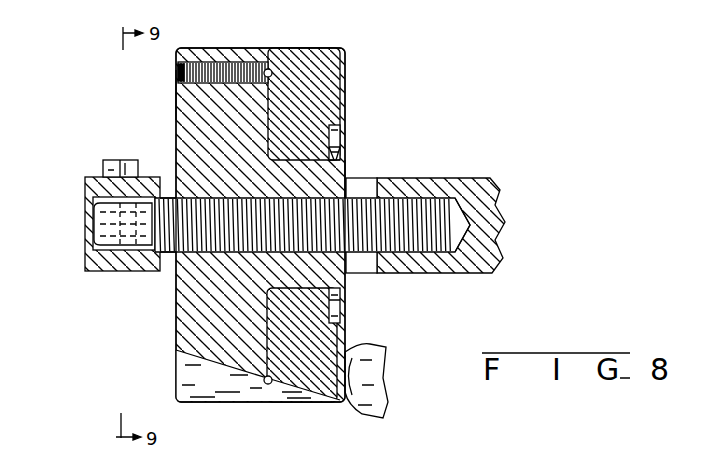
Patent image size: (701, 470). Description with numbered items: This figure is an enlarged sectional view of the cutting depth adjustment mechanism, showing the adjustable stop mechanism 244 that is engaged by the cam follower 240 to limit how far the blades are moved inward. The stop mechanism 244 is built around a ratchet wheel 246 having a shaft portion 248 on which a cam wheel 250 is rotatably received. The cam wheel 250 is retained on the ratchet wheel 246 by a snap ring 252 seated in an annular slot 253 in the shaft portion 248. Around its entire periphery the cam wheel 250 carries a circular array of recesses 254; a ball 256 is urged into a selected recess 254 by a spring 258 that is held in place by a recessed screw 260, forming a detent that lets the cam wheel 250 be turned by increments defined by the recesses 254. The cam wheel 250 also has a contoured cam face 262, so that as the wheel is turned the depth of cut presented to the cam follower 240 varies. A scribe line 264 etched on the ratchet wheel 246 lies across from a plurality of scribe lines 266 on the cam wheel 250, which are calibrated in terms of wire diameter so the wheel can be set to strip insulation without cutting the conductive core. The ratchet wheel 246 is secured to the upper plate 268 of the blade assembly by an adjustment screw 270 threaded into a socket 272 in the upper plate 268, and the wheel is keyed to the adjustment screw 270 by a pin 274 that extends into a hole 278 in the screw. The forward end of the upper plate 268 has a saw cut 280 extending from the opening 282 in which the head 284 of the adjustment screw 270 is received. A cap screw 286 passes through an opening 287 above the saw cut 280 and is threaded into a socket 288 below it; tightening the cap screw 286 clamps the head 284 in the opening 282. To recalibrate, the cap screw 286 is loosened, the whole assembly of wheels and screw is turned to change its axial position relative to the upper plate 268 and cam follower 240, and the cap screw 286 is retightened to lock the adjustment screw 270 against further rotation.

The cam follower 240 is at (360, 348).
The adjustable stop mechanism 244 is at (365, 85).
The ratchet wheel 246 is at (176, 91).
The shaft portion 248 is at (347, 177).
The cam wheel 250 is at (315, 51).
The snap ring 252 is at (340, 150).
The annular slot 253 is at (338, 170).
The recesses 254 is at (272, 72).
The ball 256 is at (274, 80).
The spring 258 is at (225, 52).
The recessed screw 260 is at (181, 61).
The cam face 262 is at (344, 352).
The scribe line 264 is at (258, 386).
The scribe lines 266 is at (274, 388).
The upper plate 268 is at (467, 178).
The adjustment screw 270 is at (354, 228).
The socket 272 is at (470, 225).
The pin 274 is at (214, 252).
The hole 278 is at (224, 198).
The saw cut 280 is at (94, 225).
The opening 282 is at (96, 242).
The head 284 is at (96, 207).
The cap screw 286 is at (118, 160).
The opening 287 is at (128, 172).
The socket 288 is at (117, 272).